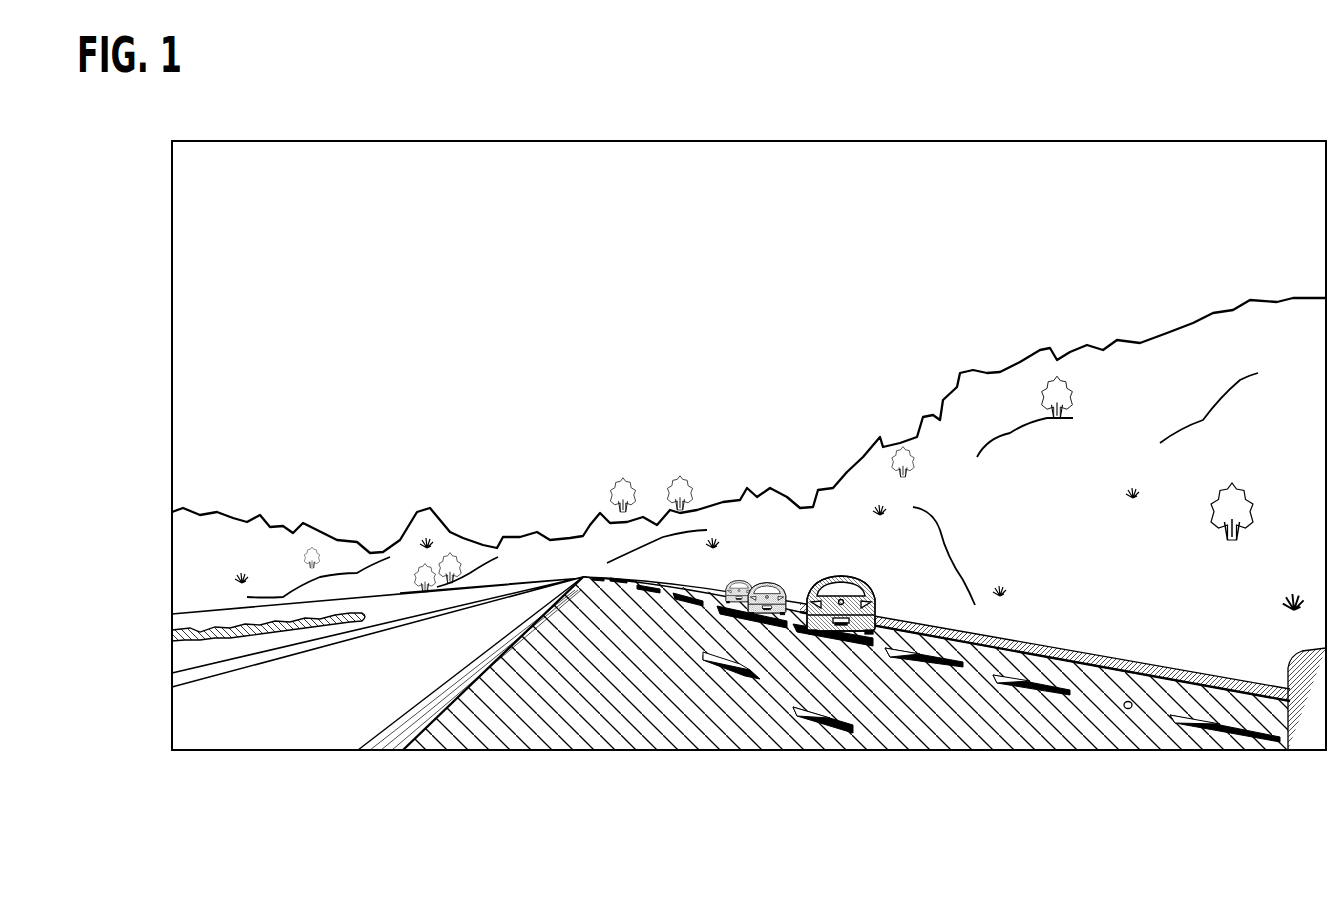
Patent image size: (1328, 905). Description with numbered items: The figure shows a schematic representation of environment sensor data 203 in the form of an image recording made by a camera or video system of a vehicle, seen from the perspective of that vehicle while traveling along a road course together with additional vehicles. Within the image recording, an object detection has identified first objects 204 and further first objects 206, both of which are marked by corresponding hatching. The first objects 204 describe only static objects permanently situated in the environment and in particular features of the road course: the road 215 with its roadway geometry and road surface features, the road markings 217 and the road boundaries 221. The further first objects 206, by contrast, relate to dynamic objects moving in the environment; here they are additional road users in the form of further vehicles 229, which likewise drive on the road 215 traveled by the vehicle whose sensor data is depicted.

The environment sensor data 203 is at (1173, 128).
The first objects 204 is at (768, 615).
The further first objects 206 is at (770, 583).
The further vehicles 229 is at (833, 612).
The road 215 is at (520, 707).
The road markings 217 is at (720, 660).
The road boundaries 221 is at (390, 738).